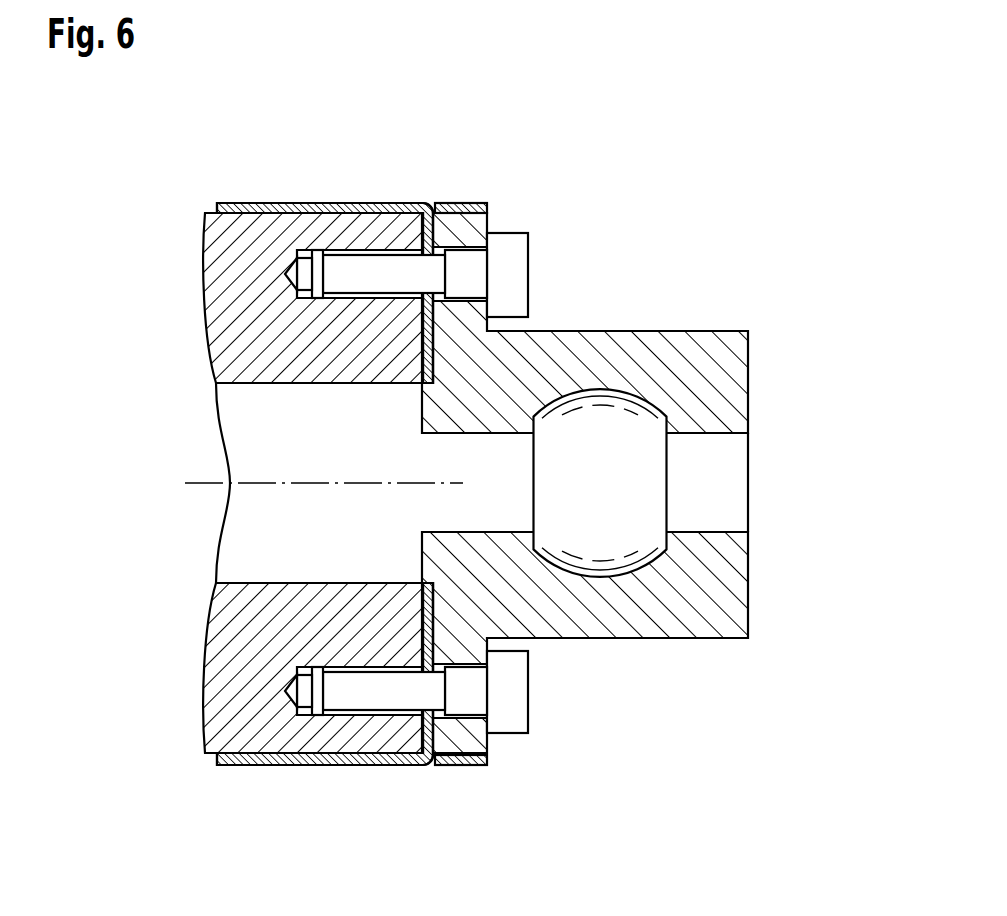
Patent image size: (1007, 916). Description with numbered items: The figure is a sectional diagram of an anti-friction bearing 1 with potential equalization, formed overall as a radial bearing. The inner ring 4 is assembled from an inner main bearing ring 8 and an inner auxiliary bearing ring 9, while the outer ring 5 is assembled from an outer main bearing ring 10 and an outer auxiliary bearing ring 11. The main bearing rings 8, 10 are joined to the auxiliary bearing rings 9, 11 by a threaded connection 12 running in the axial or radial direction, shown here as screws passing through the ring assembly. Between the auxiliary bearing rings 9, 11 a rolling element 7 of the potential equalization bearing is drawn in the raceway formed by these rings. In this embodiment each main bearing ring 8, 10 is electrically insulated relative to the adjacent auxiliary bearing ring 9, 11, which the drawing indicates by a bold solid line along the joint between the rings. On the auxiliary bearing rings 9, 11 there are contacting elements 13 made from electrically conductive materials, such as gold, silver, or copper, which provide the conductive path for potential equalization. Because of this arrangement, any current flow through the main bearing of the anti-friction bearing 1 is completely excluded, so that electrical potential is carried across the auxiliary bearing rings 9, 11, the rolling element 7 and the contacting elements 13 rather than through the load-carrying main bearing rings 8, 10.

The anti-friction bearing 1 is at (724, 162).
The inner ring 4 is at (300, 765).
The outer ring 5 is at (270, 203).
The ball 7 is at (632, 477).
The inner main bearing ring 8 is at (325, 674).
The inner auxiliary bearing ring 9 is at (712, 597).
The outer main bearing ring 10 is at (325, 293).
The outer auxiliary bearing ring 11 is at (735, 370).
The threaded connection 12 is at (507, 710).
The contacting elements 13 is at (468, 203).